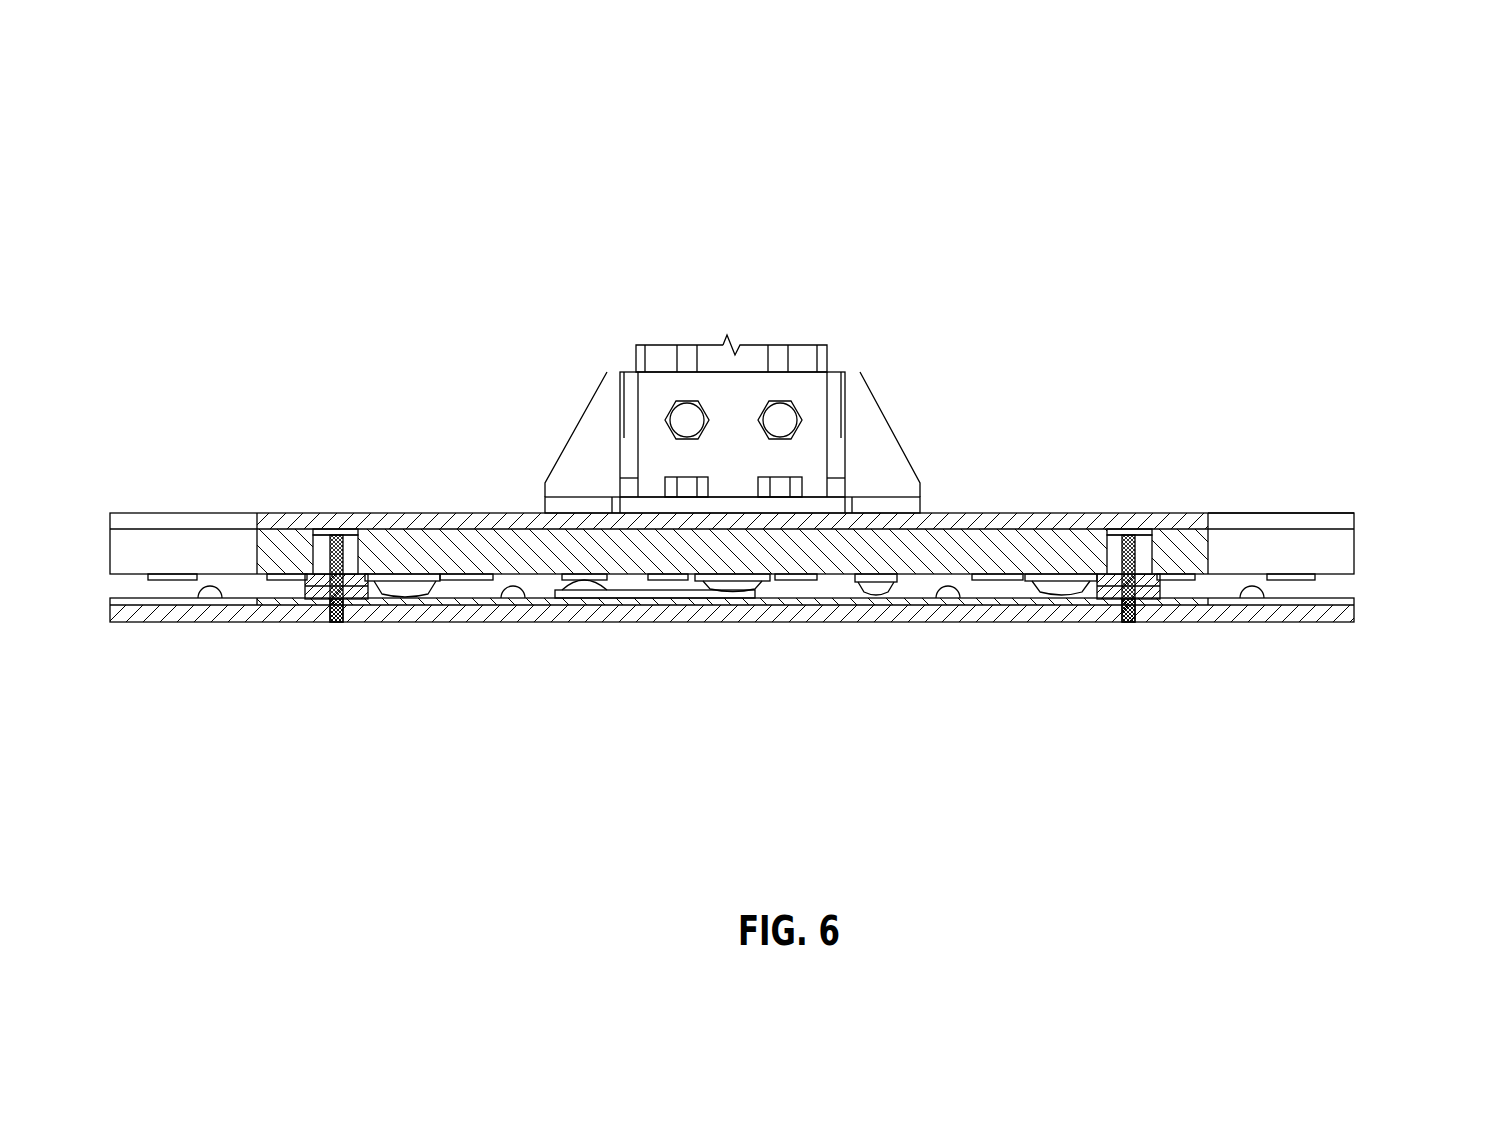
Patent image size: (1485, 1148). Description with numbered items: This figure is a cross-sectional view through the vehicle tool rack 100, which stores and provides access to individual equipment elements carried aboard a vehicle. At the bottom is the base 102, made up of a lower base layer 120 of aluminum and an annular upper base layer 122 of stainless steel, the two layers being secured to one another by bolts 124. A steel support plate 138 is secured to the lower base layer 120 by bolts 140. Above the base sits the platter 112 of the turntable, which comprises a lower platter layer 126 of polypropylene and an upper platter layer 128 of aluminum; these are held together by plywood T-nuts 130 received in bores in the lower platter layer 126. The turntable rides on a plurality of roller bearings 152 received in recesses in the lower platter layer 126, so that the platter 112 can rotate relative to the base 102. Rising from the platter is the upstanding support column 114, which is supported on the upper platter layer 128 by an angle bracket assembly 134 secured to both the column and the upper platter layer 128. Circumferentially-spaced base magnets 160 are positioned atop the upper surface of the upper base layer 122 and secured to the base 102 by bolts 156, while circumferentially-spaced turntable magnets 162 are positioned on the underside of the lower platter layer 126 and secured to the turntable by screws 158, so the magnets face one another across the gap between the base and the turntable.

The vehicle tool rack 100 is at (302, 172).
The base 102 is at (1366, 623).
The platter 112 is at (1364, 536).
The support column 114 is at (830, 352).
The lower base layer 120 is at (1333, 618).
The upper base layer 122 is at (1354, 600).
The bolts 124 is at (208, 596).
The lower platter layer 126 is at (1356, 561).
The upper platter layer 128 is at (1355, 514).
The plywood T-nuts 130 is at (167, 582).
The angle bracket assembly 134 is at (590, 440).
The support plate 138 is at (655, 605).
The bolts 140 is at (583, 590).
The roller bearings 152 is at (402, 595).
The bolts 156 is at (334, 622).
The screws 158 is at (345, 529).
The base magnets 160 is at (316, 622).
The turntable magnets 162 is at (320, 572).